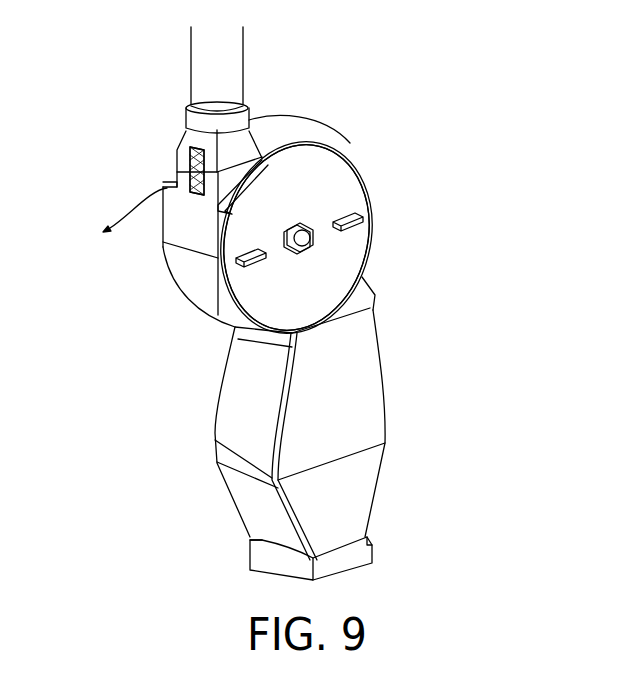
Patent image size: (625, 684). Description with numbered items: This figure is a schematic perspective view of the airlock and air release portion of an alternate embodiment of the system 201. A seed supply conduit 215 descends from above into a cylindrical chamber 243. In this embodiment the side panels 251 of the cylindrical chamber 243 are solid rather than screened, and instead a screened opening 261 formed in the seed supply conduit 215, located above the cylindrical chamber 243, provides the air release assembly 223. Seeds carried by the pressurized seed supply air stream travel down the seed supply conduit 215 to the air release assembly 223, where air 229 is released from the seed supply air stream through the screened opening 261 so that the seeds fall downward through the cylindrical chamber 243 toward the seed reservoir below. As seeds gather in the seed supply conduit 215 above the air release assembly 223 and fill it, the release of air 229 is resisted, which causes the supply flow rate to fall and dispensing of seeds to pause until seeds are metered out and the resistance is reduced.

The system 201 is at (412, 75).
The seed supply conduit 215 is at (244, 57).
The air release assembly 223 is at (187, 165).
The screened opening 261 is at (144, 165).
The air 229 is at (128, 228).
The cylindrical chamber 243 is at (350, 147).
The side panels 251 is at (343, 188).